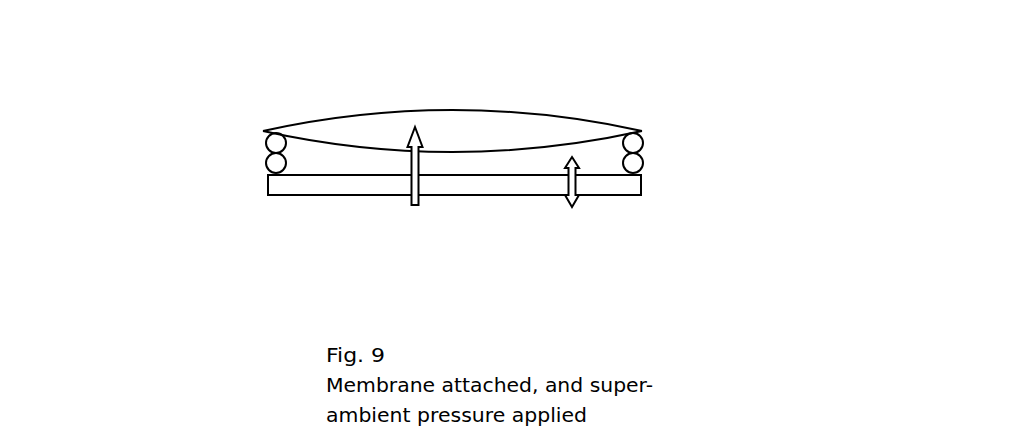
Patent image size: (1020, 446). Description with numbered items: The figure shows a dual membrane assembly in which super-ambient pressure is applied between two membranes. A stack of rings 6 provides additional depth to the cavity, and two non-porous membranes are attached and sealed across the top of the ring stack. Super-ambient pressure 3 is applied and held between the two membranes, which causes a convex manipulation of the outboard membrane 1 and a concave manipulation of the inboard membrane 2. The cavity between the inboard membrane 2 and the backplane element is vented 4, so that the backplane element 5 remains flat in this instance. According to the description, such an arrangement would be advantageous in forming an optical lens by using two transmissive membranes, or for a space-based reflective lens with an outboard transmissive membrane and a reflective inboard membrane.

The outboard membrane 1 is at (357, 111).
The inboard membrane 2 is at (572, 142).
The super-ambient pressure 3 is at (460, 199).
The vent 4 is at (610, 199).
The backplane element 5 is at (318, 194).
The rings 6 is at (649, 157).